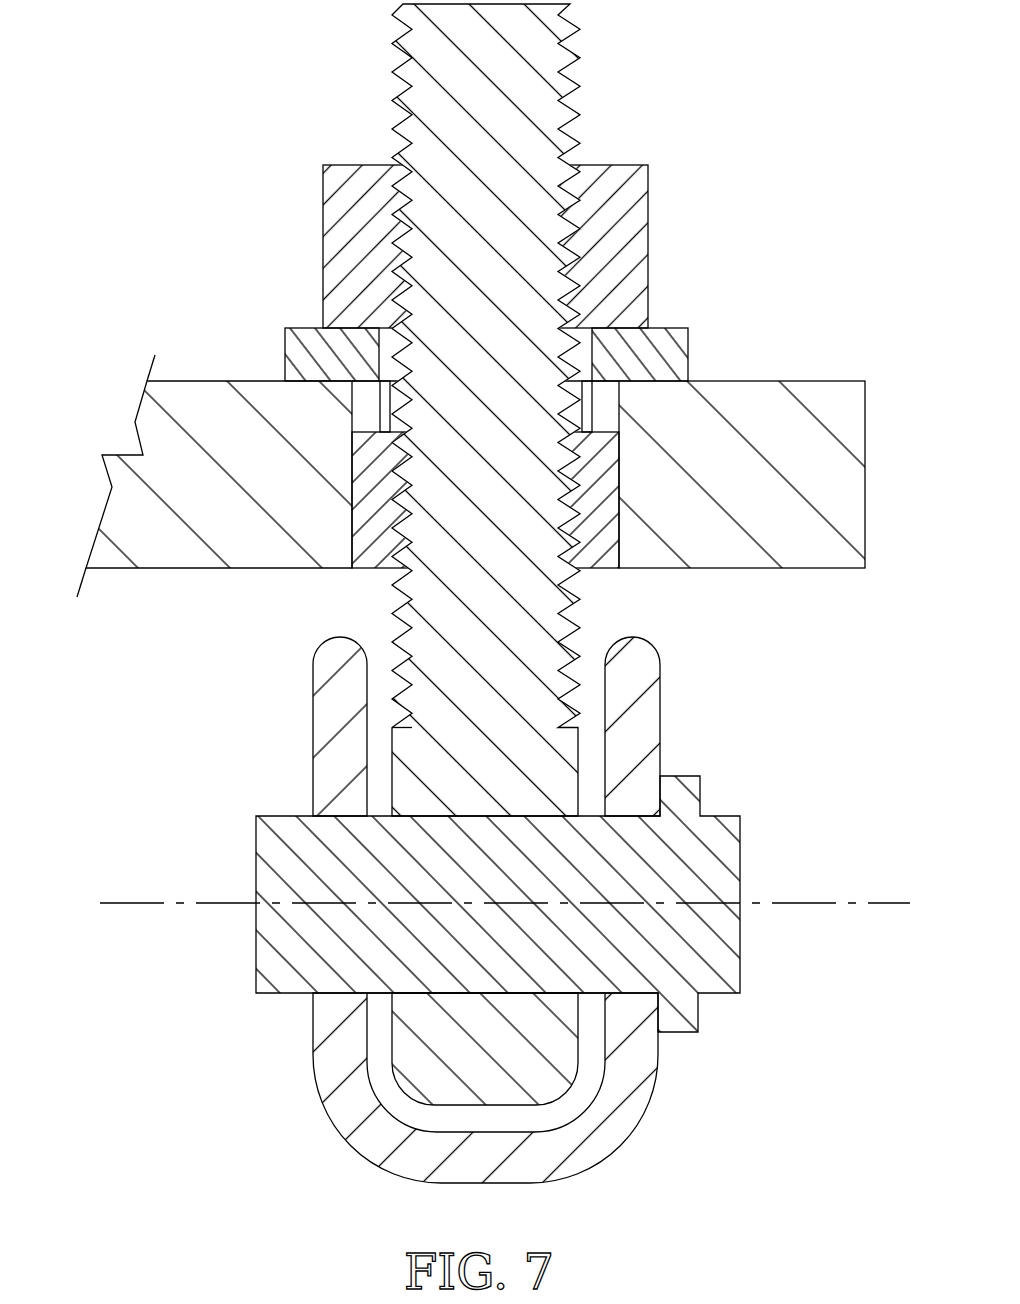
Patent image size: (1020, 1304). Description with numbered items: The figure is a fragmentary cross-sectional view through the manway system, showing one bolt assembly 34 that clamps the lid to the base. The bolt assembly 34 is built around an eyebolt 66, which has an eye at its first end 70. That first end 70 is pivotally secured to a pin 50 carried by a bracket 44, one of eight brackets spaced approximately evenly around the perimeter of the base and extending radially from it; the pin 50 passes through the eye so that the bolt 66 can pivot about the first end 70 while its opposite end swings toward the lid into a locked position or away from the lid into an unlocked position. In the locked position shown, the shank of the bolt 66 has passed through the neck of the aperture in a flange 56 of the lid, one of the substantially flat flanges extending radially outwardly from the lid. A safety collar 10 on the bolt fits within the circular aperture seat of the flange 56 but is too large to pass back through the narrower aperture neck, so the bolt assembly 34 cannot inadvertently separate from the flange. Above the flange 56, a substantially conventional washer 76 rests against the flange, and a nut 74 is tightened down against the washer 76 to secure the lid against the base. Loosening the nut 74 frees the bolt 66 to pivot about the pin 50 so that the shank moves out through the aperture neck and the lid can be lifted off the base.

The bolt assembly 34 is at (231, 90).
The eyebolt 66 is at (552, 57).
The nut 74 is at (638, 208).
The washer 76 is at (678, 353).
The flange 56 is at (829, 398).
The safety collar 10 is at (595, 557).
The bracket 44 is at (313, 716).
The pin 50 is at (256, 868).
The first end 70 is at (432, 1077).